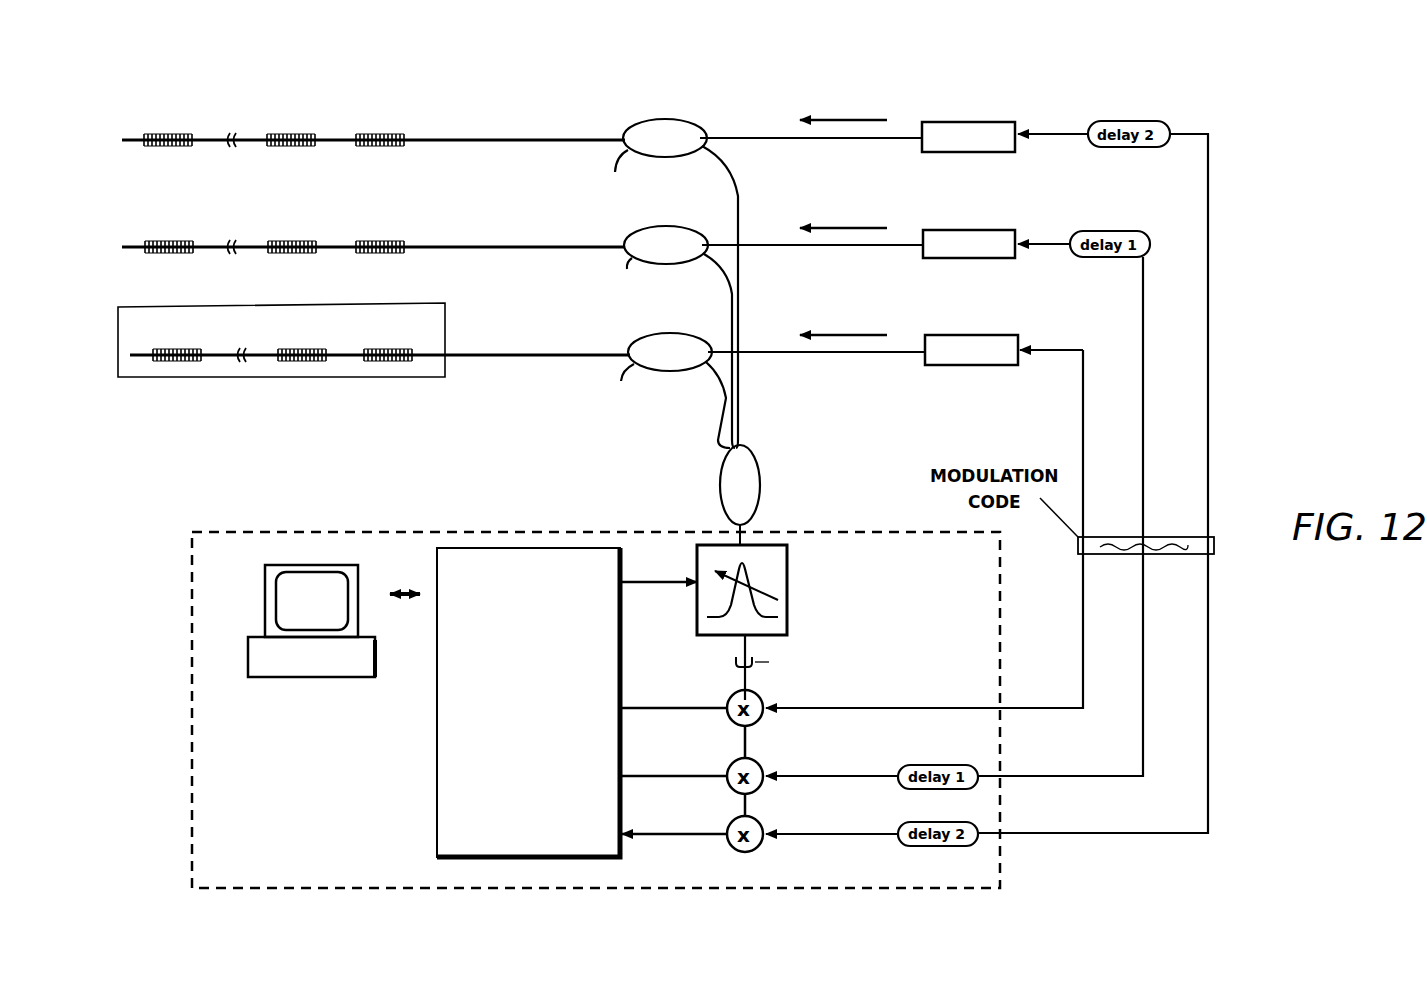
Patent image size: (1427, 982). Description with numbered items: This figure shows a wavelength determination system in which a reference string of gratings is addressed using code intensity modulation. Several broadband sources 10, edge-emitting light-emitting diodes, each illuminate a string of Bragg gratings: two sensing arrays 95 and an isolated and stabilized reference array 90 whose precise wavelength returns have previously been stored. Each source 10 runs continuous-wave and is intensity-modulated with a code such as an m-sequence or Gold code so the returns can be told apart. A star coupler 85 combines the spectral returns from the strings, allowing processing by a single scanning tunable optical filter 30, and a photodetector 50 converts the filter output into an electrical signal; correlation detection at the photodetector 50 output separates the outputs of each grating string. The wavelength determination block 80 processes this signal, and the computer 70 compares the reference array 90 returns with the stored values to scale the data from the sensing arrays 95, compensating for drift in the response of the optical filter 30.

The sensing arrays 95 is at (413, 123).
The reference array 90 is at (448, 323).
The edge-emitting light-emitting diode 10 is at (1015, 122).
The star coupler 85 is at (767, 470).
The tunable optical filter 30 is at (790, 620).
The photodetector 50 is at (839, 667).
The computer 70 is at (330, 685).
The wavelength determination block 80 is at (430, 788).